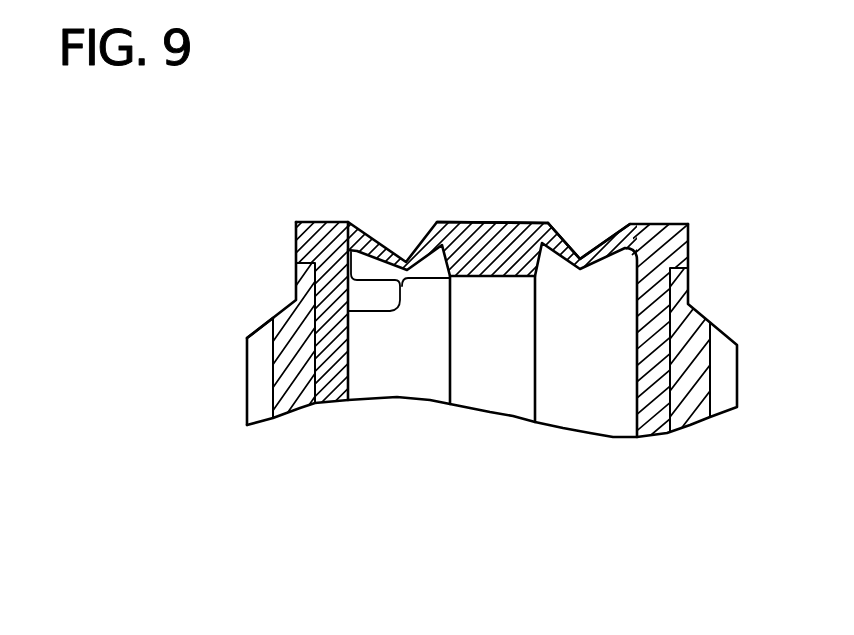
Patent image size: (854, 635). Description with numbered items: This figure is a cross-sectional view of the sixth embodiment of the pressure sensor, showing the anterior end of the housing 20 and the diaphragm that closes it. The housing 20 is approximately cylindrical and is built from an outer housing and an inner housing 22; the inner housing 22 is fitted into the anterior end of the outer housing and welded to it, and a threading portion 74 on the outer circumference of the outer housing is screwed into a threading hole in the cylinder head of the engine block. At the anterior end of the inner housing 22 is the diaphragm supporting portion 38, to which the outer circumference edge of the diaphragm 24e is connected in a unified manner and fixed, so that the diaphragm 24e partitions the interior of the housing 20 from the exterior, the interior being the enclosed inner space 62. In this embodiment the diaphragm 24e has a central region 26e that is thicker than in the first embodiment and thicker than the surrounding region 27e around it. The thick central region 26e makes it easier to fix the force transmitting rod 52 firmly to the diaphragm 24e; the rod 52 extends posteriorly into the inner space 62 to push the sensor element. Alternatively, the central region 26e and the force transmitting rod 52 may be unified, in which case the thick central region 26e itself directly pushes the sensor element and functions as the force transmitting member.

The housing 20 is at (262, 308).
The inner housing 22 is at (333, 405).
The diaphragm 24e is at (470, 214).
The central region 26e is at (520, 236).
The surrounding region 27e is at (355, 308).
The diaphragm supporting portion 38 is at (318, 237).
The force transmitting rod 52 is at (484, 408).
The inner space 62 is at (298, 412).
The threading portion 74 is at (250, 418).